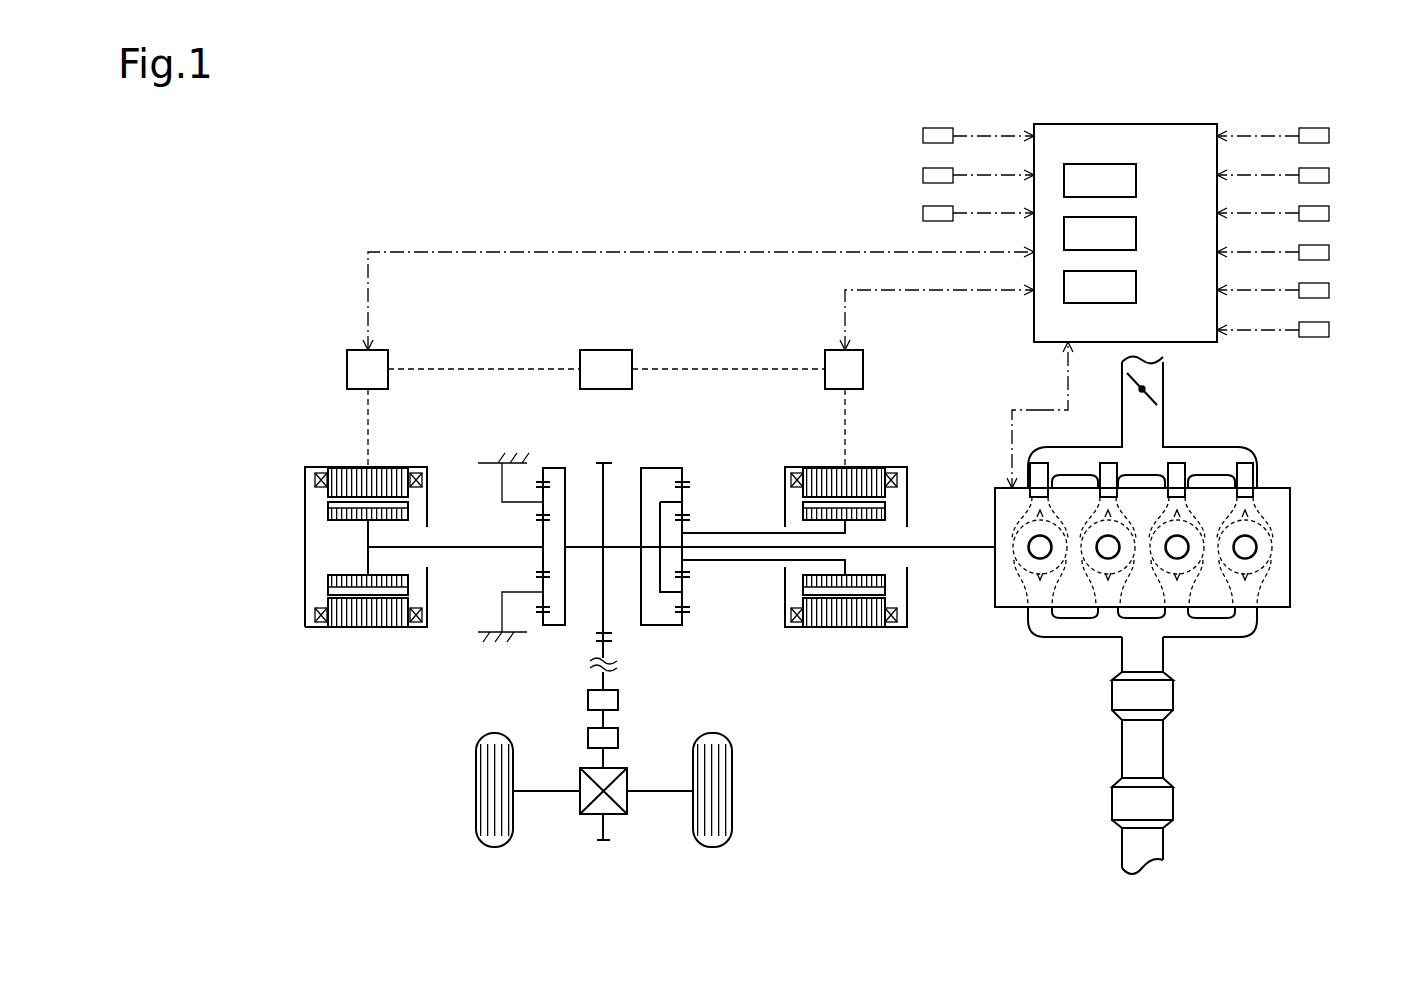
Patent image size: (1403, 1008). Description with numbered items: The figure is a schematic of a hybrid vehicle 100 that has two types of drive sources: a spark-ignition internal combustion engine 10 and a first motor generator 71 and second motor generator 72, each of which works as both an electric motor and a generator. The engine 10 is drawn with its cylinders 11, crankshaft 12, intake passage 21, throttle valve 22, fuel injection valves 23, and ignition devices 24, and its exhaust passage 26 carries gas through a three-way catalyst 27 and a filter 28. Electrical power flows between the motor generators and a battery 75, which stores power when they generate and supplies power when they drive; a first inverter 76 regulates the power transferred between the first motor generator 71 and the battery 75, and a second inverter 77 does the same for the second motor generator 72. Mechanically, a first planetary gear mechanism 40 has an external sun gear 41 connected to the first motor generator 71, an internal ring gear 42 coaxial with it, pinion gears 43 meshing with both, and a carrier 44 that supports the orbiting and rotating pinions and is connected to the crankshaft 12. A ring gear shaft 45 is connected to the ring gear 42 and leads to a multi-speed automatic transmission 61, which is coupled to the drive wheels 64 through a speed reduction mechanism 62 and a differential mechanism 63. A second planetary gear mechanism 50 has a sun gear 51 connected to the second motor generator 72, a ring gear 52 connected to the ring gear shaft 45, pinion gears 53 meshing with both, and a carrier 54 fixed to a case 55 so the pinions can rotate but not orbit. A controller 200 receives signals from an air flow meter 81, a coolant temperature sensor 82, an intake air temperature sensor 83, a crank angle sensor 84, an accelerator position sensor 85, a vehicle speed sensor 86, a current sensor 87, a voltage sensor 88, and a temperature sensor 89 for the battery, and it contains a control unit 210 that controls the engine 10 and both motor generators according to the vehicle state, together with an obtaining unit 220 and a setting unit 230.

The vehicle 100 is at (382, 153).
The internal combustion engine 10 is at (1013, 695).
The cylinders 11 is at (1142, 552).
The crankshaft 12 is at (965, 547).
The intake passage 21 is at (1122, 382).
The throttle valve 22 is at (1155, 395).
The fuel injection valves 23 is at (1108, 463).
The ignition devices 24 is at (1028, 547).
The exhaust passage 26 is at (1120, 748).
The three-way catalyst 27 is at (1110, 693).
The filter 28 is at (1110, 803).
The first planetary gear mechanism 40 is at (682, 450).
The sun gear 41 is at (690, 523).
The ring gear 42 is at (690, 477).
The pinion gears 43 is at (687, 583).
The carrier 44 is at (667, 593).
The ring gear shaft 45 is at (620, 547).
The second planetary gear mechanism 50 is at (480, 448).
The sun gear 51 is at (540, 537).
The ring gear 52 is at (536, 480).
The pinion gears 53 is at (530, 600).
The carrier 54 is at (512, 592).
The case 55 is at (485, 632).
The automatic transmission 61 is at (587, 700).
The speed reduction mechanism 62 is at (587, 738).
The differential mechanism 63 is at (590, 815).
The drive wheels 64 is at (475, 802).
The first motor generator 71 is at (897, 467).
The second motor generator 72 is at (305, 562).
The battery 75 is at (635, 360).
The first inverter 76 is at (823, 383).
The second inverter 77 is at (347, 382).
The air flow meter 81 is at (1329, 136).
The coolant temperature sensor 82 is at (1329, 175).
The intake air temperature sensor 83 is at (1329, 213).
The crank angle sensor 84 is at (1329, 252).
The accelerator position sensor 85 is at (1329, 290).
The vehicle speed sensor 86 is at (1329, 330).
The current sensor 87 is at (923, 136).
The voltage sensor 88 is at (923, 175).
The temperature sensor 89 is at (923, 213).
The controller 200 is at (1160, 124).
The control unit 210 is at (1136, 180).
The obtaining unit 220 is at (1136, 233).
The setting unit 230 is at (1136, 287).